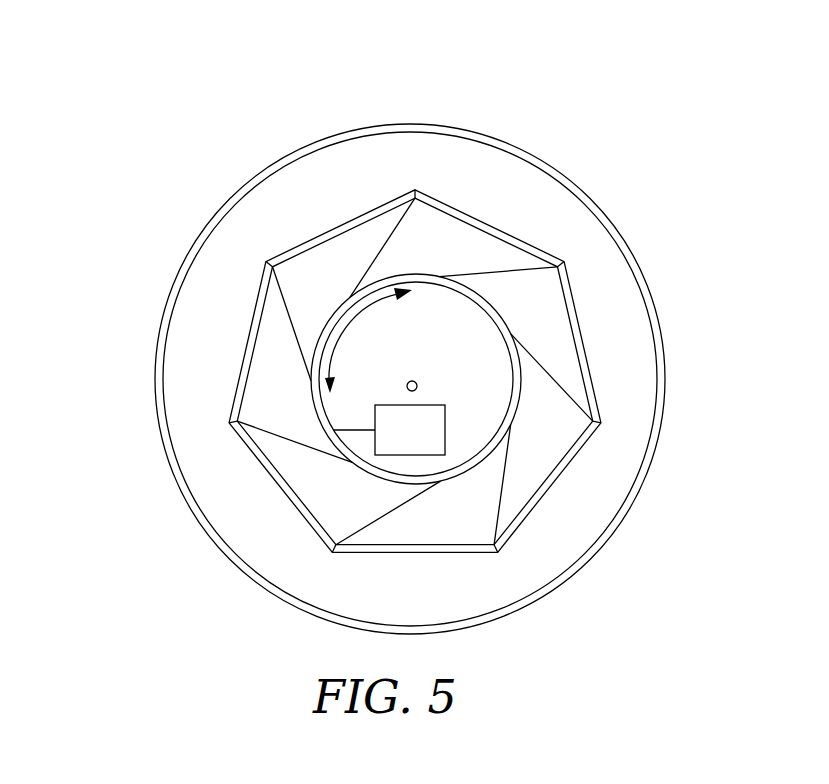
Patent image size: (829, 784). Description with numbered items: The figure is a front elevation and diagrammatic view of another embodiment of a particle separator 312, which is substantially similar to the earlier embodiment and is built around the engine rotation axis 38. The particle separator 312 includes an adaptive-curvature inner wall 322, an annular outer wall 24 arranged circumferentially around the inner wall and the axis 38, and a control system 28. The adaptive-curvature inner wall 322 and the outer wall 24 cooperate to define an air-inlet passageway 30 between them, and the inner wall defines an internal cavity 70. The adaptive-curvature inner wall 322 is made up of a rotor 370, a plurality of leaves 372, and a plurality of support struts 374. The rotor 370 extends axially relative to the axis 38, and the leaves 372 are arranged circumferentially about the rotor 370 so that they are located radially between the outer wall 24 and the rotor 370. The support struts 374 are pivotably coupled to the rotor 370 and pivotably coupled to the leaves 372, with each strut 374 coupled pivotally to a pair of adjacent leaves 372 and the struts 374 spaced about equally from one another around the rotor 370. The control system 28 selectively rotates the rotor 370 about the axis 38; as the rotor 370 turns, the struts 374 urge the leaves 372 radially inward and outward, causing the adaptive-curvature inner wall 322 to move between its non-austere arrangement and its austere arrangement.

The particle separator 312 is at (160, 123).
The outer wall 24 is at (495, 122).
The air-inlet passageway 30 is at (234, 532).
The adaptive-curvature inner wall 322 is at (222, 361).
The leaves 372 is at (577, 302).
The support struts 374 is at (557, 377).
The rotor 370 is at (513, 415).
The internal cavity 70 is at (368, 340).
The engine rotation axis 38 is at (415, 381).
The control system 28 is at (446, 430).